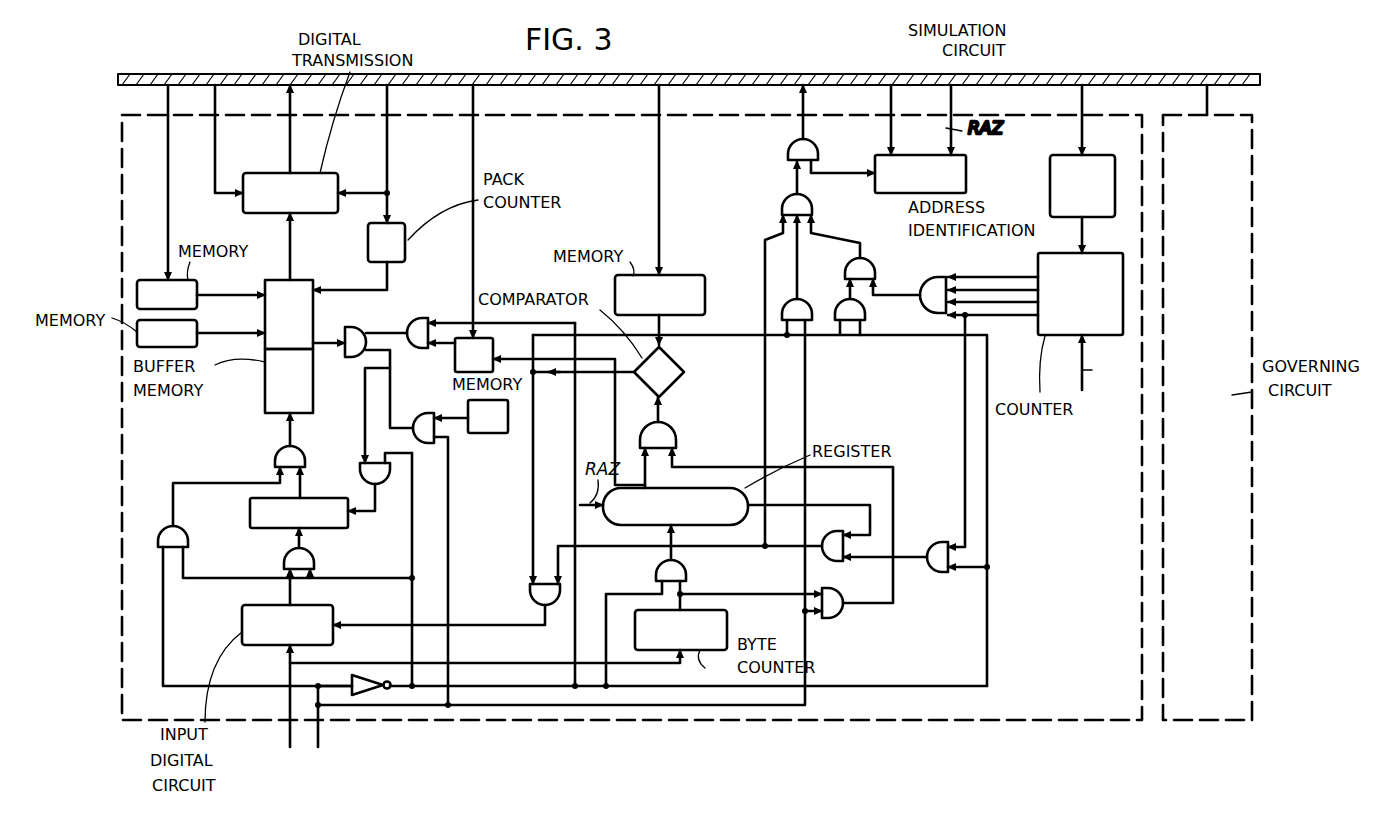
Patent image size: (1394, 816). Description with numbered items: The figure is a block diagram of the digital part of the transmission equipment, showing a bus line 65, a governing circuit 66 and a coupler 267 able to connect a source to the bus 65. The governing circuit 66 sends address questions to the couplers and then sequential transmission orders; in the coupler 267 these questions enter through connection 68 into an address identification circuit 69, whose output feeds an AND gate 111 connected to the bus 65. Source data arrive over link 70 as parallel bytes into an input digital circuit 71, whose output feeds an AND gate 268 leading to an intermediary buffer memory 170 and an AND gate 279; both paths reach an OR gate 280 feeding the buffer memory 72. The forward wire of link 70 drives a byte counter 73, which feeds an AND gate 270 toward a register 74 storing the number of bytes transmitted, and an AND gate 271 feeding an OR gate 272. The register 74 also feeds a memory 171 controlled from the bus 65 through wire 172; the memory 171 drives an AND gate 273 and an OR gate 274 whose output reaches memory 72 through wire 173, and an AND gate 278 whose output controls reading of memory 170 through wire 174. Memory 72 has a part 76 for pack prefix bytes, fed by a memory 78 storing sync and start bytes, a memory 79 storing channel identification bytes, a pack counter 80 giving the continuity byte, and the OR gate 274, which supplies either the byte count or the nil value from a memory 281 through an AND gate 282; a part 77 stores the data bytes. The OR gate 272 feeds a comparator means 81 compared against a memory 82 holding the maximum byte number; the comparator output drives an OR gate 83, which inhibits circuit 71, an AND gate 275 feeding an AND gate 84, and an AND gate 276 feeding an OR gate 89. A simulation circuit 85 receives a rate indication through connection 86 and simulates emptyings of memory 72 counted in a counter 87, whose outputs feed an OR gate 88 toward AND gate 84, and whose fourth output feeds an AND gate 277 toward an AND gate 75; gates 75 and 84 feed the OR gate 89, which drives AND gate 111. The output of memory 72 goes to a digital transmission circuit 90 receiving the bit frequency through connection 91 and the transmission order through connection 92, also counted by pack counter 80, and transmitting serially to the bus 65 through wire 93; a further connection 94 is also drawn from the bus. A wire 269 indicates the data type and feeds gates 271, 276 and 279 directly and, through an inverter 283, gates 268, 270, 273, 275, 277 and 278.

The bus line 65 is at (1048, 155).
The governing circuit 66 is at (1220, 649).
The connection 68 is at (890, 136).
The address identification circuit 69 is at (920, 174).
The link 70 is at (283, 698).
The input digital circuit 71 is at (287, 611).
The buffer memory 72 is at (265, 392).
The byte counter 73 is at (508, 628).
The register 74 is at (736, 511).
The AND gate 75 is at (826, 562).
The part of data memory storing pack prefix bytes 76 is at (289, 281).
The part of data memory storing data bytes 77 is at (289, 381).
The memory 78 is at (201, 197).
The memory 79 is at (201, 333).
The pack counter 80 is at (359, 256).
The comparator means 81 is at (608, 372).
The memory 82 is at (660, 310).
The OR gate 83 is at (528, 598).
The AND gate 84 is at (868, 262).
The simulation circuit 85 is at (1082, 204).
The connection 86 is at (1081, 136).
The counter 87 is at (1086, 318).
The OR gate 88 is at (942, 283).
The OR gate 89 is at (782, 203).
The digital transmission circuit 90 is at (290, 193).
The connection 91 is at (214, 132).
The connection 92 is at (388, 132).
The wire 93 is at (290, 132).
The line 94 is at (660, 132).
The AND gate 111 is at (792, 148).
The intermediary buffer memory 170 is at (299, 513).
The memory 171 is at (474, 355).
The wire 172 is at (474, 132).
The wire 173 is at (334, 338).
The wire 174 is at (366, 430).
The coupler 267 is at (1116, 615).
The AND gate 268 is at (312, 552).
The wire 269 is at (320, 738).
The AND gate 270 is at (684, 566).
The AND gate 271 is at (838, 618).
The OR gate 272 is at (672, 428).
The AND gate 273 is at (416, 318).
The OR gate 274 is at (353, 355).
The AND gate 275 is at (862, 312).
The AND gate 276 is at (810, 310).
The AND gate 277 is at (935, 572).
The AND gate 278 is at (362, 473).
The AND gate 279 is at (178, 530).
The OR gate 280 is at (278, 455).
The memory 281 is at (484, 435).
The AND gate 282 is at (426, 413).
The inverter 283 is at (370, 675).